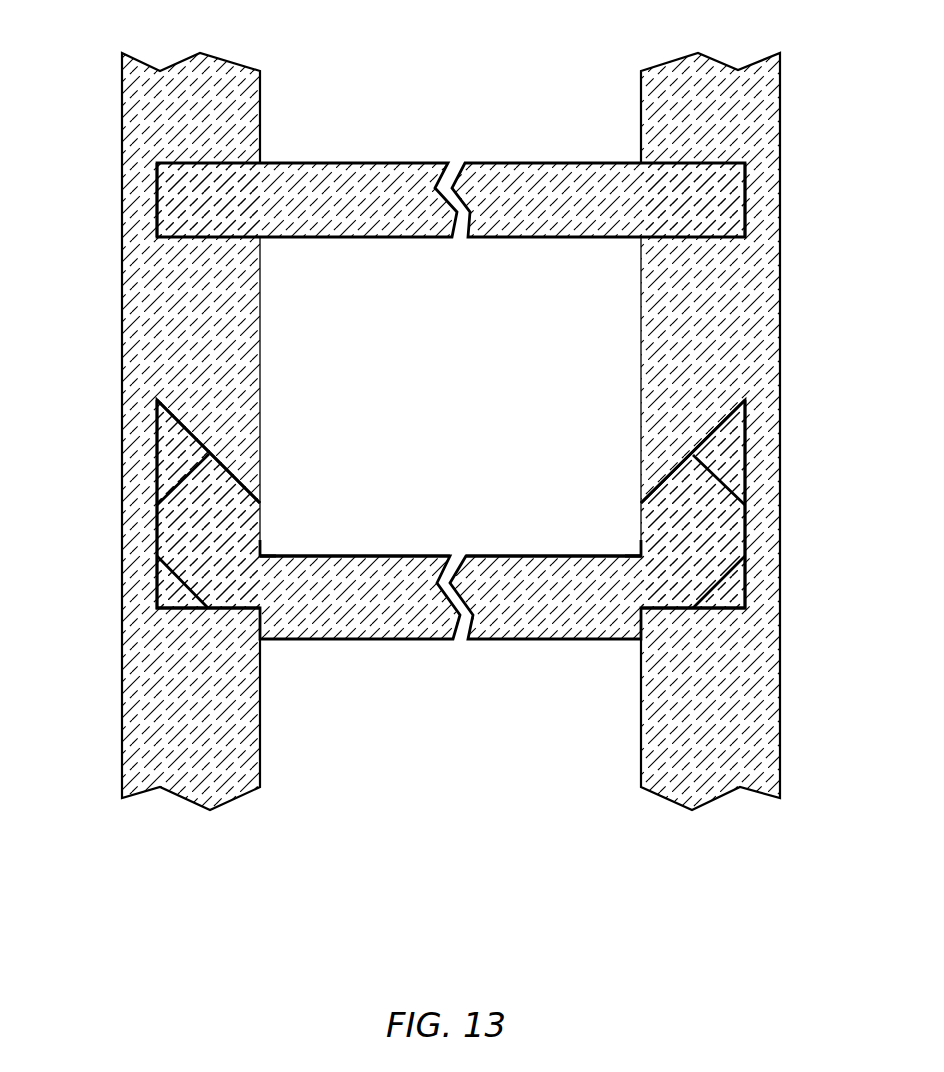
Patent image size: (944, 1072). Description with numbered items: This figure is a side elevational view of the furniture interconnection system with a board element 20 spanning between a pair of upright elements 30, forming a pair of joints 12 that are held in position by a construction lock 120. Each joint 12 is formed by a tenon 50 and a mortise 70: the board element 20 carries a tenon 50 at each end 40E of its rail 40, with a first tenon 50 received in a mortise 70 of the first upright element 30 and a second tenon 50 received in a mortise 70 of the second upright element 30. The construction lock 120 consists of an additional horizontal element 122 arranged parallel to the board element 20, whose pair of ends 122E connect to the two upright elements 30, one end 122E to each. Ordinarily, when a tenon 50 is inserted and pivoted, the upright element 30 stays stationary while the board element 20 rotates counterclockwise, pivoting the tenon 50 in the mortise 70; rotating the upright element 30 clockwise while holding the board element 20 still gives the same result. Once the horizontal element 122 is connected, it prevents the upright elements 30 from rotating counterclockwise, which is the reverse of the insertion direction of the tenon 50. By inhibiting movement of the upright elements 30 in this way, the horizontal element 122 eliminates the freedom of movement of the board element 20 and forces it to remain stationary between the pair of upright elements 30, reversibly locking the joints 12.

The joint 12 is at (290, 535).
The board element 20 is at (499, 566).
The upright element 30 is at (288, 378).
The rail 40 is at (488, 642).
The end of the rail 40E is at (261, 629).
The tenon 50 is at (250, 517).
The mortise 70 is at (168, 437).
The construction lock 120 is at (357, 266).
The horizontal element 122 is at (470, 180).
The end of the horizontal element 122E is at (157, 192).